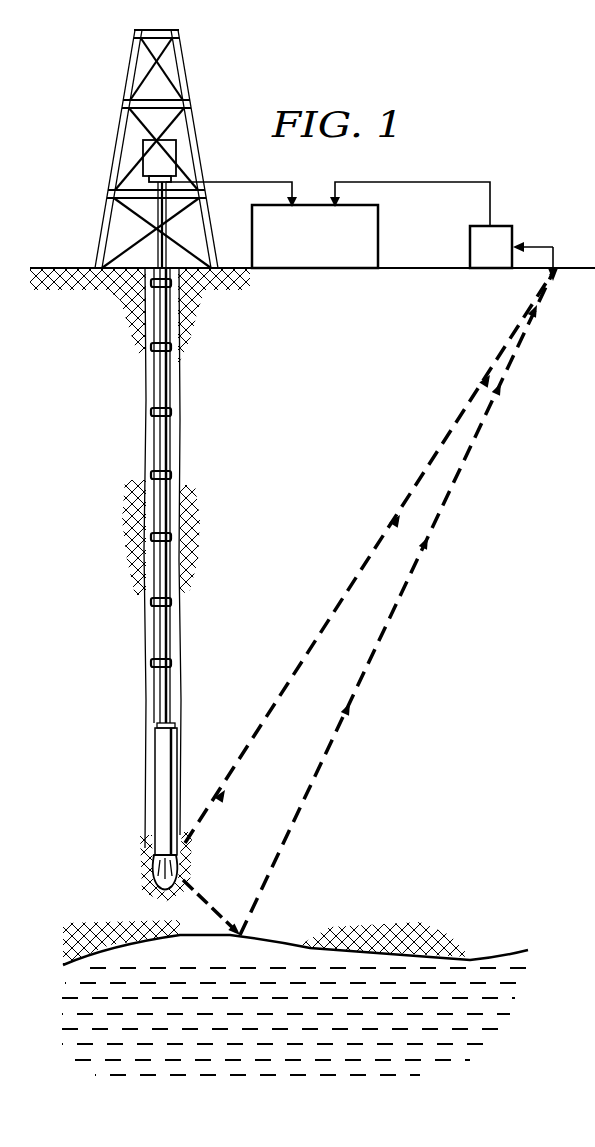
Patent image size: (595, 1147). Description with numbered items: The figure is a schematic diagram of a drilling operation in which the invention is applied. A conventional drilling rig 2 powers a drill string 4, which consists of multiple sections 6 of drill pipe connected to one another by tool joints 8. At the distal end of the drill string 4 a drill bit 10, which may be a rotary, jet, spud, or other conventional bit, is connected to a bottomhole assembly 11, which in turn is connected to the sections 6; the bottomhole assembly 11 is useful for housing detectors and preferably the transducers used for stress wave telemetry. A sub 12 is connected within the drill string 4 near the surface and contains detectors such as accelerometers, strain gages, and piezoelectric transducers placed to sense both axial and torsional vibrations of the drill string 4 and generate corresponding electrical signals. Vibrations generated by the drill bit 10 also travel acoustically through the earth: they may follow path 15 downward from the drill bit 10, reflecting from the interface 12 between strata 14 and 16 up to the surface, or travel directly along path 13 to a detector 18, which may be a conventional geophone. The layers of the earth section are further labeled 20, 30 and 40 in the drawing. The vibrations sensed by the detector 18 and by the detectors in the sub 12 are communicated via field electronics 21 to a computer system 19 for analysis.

The drilling rig 2 is at (123, 105).
The drill string 4 is at (122, 452).
The sections of drill pipe 6 is at (168, 440).
The tool joints 8 is at (151, 413).
The drill bit 10 is at (155, 862).
The bottomhole assembly 11 is at (157, 793).
The sub 12 is at (147, 178).
The path 13 is at (266, 715).
The stratum 14 is at (370, 874).
The path 15 is at (334, 748).
The stratum 16 is at (284, 1024).
The detector 18 is at (553, 270).
The computer system 19 is at (378, 240).
The first formation layer 20 is at (586, 819).
The field electronics 21 is at (494, 226).
The second formation layer 30 is at (586, 946).
The third formation layer 40 is at (586, 1089).